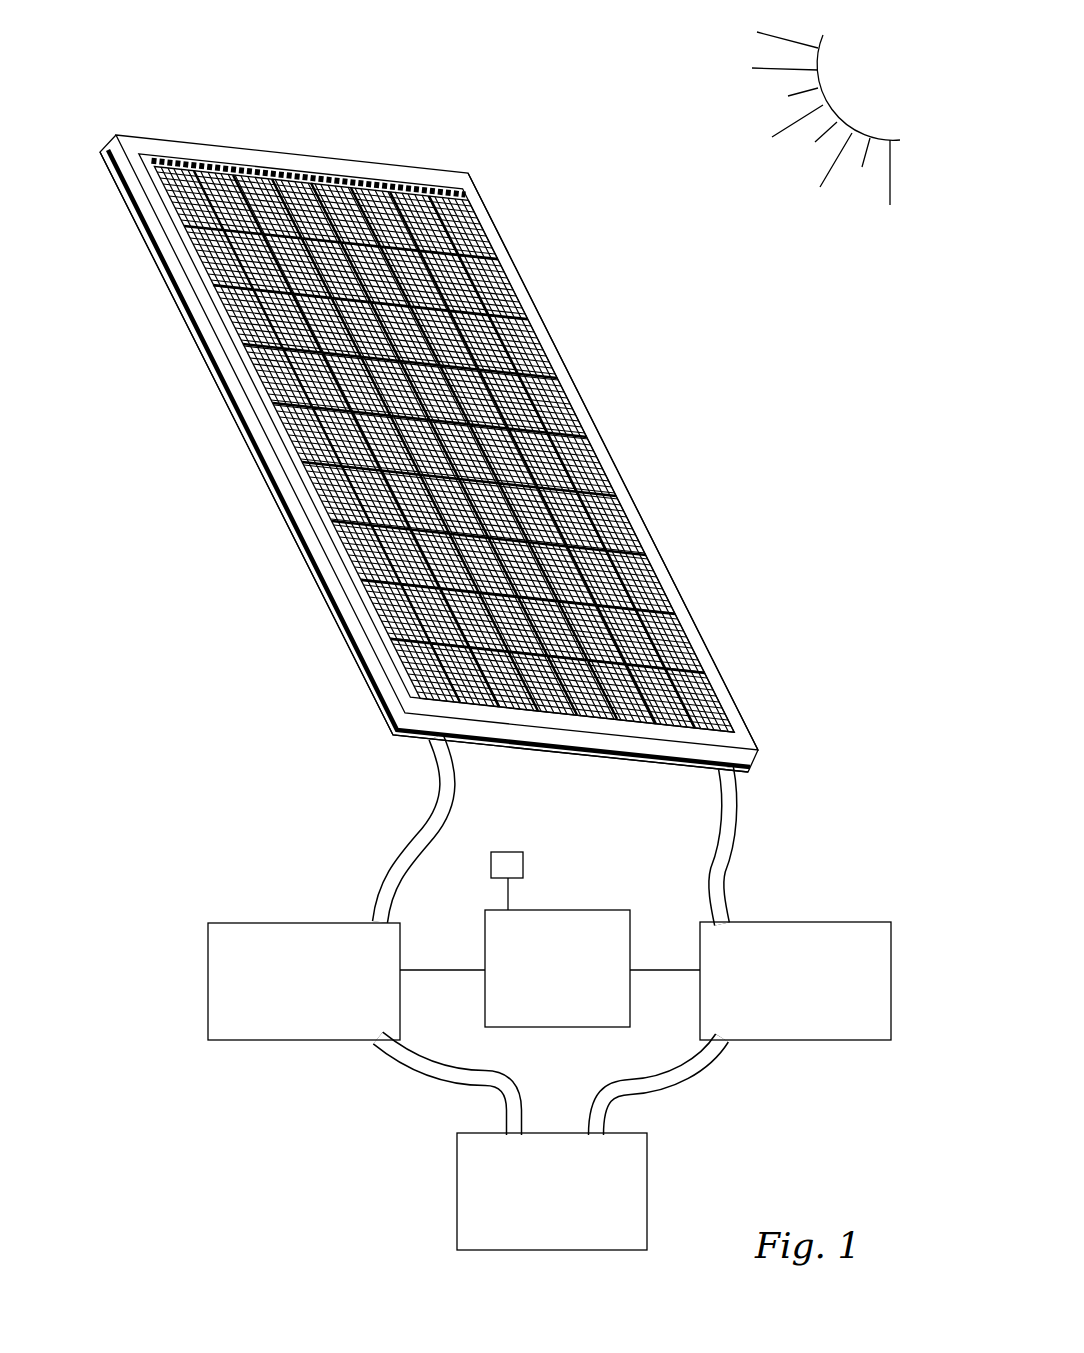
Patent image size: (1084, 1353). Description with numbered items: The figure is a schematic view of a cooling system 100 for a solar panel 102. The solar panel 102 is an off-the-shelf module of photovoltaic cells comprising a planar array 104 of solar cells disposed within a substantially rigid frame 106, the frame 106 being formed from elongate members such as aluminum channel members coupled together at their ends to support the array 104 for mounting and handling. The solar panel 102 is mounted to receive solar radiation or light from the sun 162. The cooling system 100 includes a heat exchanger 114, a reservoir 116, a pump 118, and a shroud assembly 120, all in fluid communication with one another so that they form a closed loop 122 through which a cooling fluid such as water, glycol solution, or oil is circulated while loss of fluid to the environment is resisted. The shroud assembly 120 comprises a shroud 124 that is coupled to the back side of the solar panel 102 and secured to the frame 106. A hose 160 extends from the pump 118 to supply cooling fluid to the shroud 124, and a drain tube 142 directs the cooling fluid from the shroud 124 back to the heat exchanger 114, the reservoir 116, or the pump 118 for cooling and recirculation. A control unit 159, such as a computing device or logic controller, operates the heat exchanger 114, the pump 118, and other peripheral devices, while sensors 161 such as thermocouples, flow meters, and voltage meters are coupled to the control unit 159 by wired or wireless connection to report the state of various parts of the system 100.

The cooling system 100 is at (321, 811).
The solar panel 102 is at (436, 170).
The planar array 104 is at (522, 334).
The frame 106 is at (586, 406).
The heat exchanger 114 is at (810, 922).
The reservoir 116 is at (648, 1192).
The pump 118 is at (208, 977).
The shroud assembly 120 is at (357, 681).
The closed loop 122 is at (745, 820).
The shroud 124 is at (312, 582).
The drain tube 142 is at (718, 793).
The control unit 159 is at (552, 908).
The hose 160 is at (453, 790).
The sensors 161 is at (523, 855).
The sun 162 is at (893, 91).